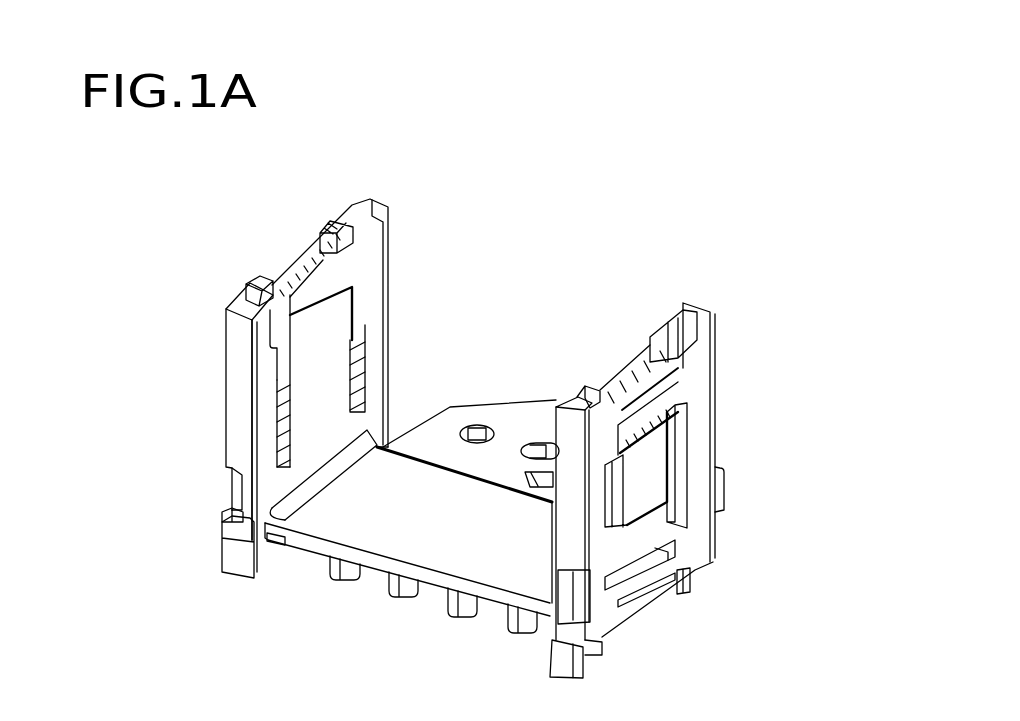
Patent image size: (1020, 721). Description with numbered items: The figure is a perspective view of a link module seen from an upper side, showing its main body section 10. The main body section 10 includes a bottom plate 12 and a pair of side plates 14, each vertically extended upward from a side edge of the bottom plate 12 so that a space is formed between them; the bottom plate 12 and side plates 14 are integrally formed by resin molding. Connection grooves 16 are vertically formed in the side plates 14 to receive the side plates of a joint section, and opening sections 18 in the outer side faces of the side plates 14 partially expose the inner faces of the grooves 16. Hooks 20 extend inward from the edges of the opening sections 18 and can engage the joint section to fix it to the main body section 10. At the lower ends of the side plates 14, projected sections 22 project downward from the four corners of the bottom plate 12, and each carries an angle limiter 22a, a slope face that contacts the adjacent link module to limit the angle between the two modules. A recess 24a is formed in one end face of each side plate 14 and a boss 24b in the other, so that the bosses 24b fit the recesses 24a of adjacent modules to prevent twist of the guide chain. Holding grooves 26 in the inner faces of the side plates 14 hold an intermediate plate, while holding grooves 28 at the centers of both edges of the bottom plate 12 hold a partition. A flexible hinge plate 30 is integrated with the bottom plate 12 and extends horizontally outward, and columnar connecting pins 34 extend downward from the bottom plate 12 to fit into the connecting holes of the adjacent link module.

The main body section 10 is at (506, 200).
The bottom plate 12 is at (466, 551).
The side plate 14 is at (241, 380).
The connection groove 16 is at (320, 255).
The opening section 18 is at (668, 540).
The hook 20 is at (650, 465).
The projected section 22 is at (593, 662).
The angle limiter 22a is at (243, 567).
The recess 24a is at (232, 493).
The boss 24b is at (723, 493).
The holding groove 26 is at (367, 350).
The holding groove 28 is at (507, 426).
The flexible hinge plate 30 is at (527, 447).
The connecting pin 34 is at (351, 571).